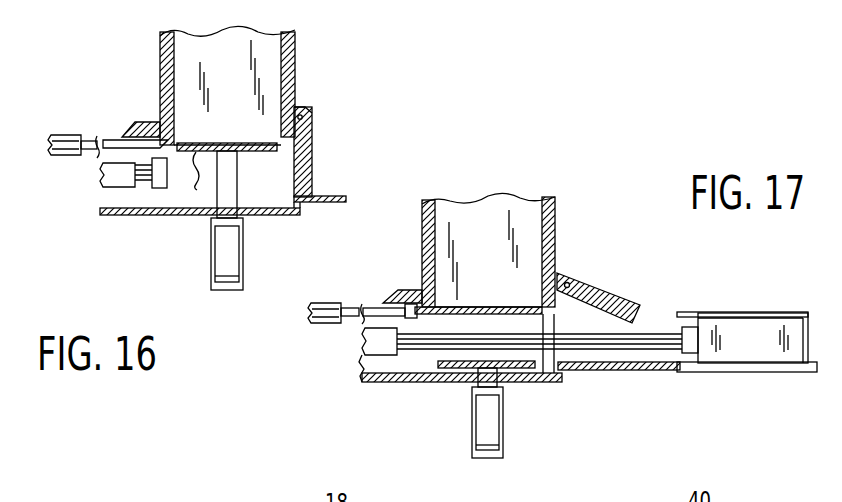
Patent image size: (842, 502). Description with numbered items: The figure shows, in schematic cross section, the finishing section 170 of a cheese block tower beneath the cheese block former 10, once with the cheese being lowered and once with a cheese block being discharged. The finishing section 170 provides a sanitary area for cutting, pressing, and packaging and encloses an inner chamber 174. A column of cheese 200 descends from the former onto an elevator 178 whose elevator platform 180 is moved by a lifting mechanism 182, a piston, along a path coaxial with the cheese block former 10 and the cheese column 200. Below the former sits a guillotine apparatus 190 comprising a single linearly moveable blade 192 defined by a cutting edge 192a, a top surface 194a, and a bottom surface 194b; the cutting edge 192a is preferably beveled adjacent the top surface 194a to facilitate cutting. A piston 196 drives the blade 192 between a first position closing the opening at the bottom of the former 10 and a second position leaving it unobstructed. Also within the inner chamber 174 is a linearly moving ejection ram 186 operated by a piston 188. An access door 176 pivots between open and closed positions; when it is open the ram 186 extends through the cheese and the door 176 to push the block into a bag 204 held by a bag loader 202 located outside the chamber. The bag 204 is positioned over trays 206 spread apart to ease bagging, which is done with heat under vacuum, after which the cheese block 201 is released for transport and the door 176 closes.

In FIG. 16, the cheese block former 10 is at (318, 38).
In FIG. 17, the cheese block former 10 is at (582, 202).
In FIG. 16, the finishing section 170 is at (96, 262).
In FIG. 17, the finishing section 170 is at (552, 391).
In FIG. 16, the inner chamber 174 is at (287, 162).
In FIG. 16, the access door 176 is at (313, 150).
In FIG. 17, the access door 176 is at (607, 297).
In FIG. 16, the elevator 178 is at (227, 270).
In FIG. 17, the elevator 178 is at (493, 440).
In FIG. 16, the elevator platform 180 is at (200, 183).
In FIG. 17, the elevator platform 180 is at (443, 372).
In FIG. 16, the lifting mechanism 182 is at (233, 203).
In FIG. 17, the lifting mechanism 182 is at (492, 380).
In FIG. 16, the ejection ram 186 is at (158, 186).
In FIG. 17, the ejection ram 186 is at (683, 355).
In FIG. 16, the piston 188 is at (102, 209).
In FIG. 16, the guillotine apparatus 190 is at (97, 140).
In FIG. 17, the guillotine apparatus 190 is at (353, 307).
In FIG. 16, the blade 192 is at (120, 146).
In FIG. 17, the blade 192 is at (485, 306).
In FIG. 16, the cutting edge 192a is at (187, 143).
In FIG. 16, the top surface 194a is at (129, 122).
In FIG. 16, the bottom surface 194b is at (118, 164).
In FIG. 16, the piston 196 is at (50, 142).
In FIG. 17, the piston 196 is at (323, 320).
In FIG. 16, the column of cheese 200 is at (183, 57).
In FIG. 17, the column of cheese 200 is at (483, 205).
In FIG. 17, the cheese block 201 is at (738, 322).
In FIG. 17, the bag loader 202 is at (732, 280).
In FIG. 17, the bag 204 is at (780, 310).
In FIG. 17, the trays 206 is at (763, 318).